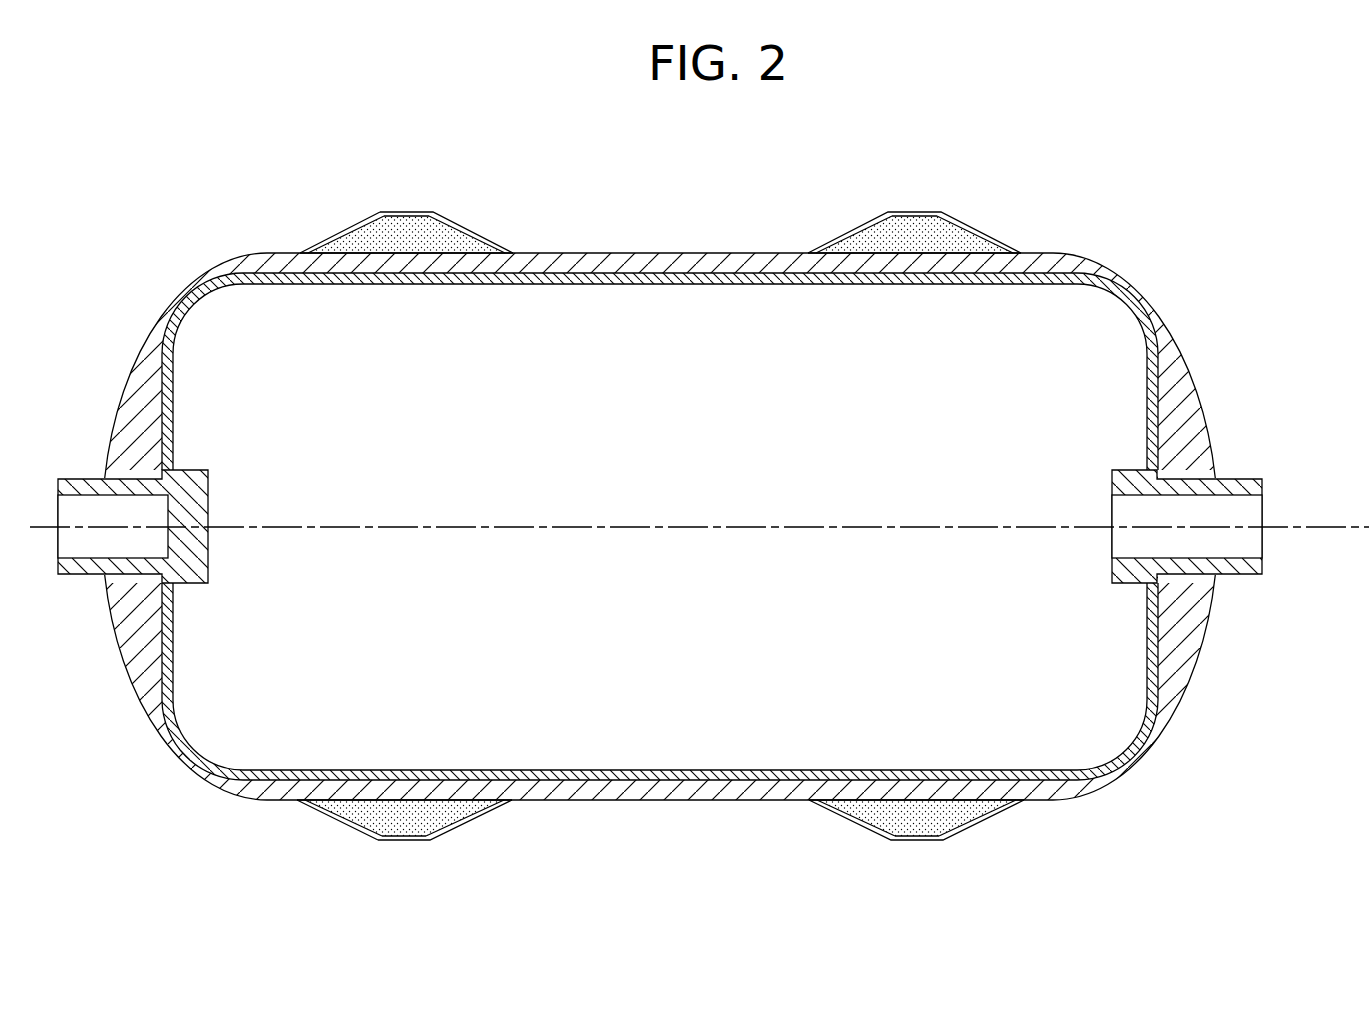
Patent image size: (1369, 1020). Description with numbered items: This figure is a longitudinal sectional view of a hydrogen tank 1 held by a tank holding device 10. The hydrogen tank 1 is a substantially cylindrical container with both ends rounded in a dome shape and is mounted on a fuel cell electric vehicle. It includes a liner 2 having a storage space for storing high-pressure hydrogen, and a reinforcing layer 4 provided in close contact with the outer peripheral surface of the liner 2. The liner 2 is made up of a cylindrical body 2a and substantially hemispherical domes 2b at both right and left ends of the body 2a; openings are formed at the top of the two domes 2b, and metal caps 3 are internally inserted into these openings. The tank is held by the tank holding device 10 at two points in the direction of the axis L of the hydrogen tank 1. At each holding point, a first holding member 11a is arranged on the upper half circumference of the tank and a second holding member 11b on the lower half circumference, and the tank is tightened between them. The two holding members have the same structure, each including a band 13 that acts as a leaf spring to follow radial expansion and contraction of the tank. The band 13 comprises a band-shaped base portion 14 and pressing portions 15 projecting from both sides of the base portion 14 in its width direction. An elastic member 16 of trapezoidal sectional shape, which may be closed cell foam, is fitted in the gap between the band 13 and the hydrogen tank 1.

The hydrogen tank 1 is at (1148, 288).
The liner 2 is at (676, 278).
The body 2a is at (636, 770).
The dome 2b is at (200, 730).
The cap 3 is at (78, 578).
The reinforcing layer 4 is at (180, 300).
The tank holding device 10 is at (438, 210).
The first holding member 11a is at (378, 209).
The second holding member 11b is at (434, 843).
The band 13 is at (351, 222).
The base portion 14 is at (423, 212).
The pressing portion 15 is at (340, 235).
The elastic member 16 is at (405, 237).
The axis L is at (1338, 532).